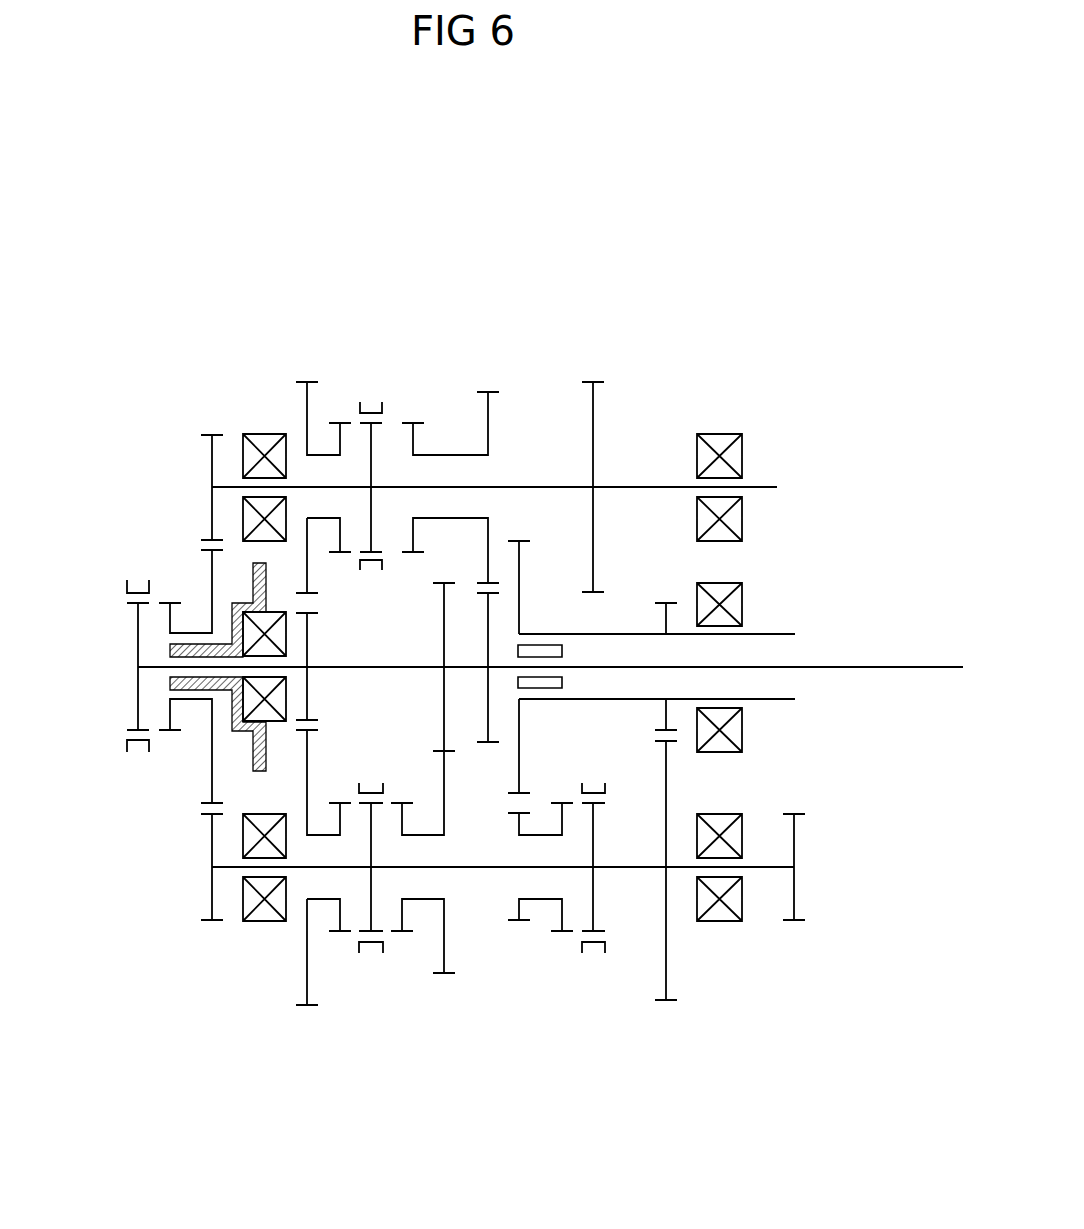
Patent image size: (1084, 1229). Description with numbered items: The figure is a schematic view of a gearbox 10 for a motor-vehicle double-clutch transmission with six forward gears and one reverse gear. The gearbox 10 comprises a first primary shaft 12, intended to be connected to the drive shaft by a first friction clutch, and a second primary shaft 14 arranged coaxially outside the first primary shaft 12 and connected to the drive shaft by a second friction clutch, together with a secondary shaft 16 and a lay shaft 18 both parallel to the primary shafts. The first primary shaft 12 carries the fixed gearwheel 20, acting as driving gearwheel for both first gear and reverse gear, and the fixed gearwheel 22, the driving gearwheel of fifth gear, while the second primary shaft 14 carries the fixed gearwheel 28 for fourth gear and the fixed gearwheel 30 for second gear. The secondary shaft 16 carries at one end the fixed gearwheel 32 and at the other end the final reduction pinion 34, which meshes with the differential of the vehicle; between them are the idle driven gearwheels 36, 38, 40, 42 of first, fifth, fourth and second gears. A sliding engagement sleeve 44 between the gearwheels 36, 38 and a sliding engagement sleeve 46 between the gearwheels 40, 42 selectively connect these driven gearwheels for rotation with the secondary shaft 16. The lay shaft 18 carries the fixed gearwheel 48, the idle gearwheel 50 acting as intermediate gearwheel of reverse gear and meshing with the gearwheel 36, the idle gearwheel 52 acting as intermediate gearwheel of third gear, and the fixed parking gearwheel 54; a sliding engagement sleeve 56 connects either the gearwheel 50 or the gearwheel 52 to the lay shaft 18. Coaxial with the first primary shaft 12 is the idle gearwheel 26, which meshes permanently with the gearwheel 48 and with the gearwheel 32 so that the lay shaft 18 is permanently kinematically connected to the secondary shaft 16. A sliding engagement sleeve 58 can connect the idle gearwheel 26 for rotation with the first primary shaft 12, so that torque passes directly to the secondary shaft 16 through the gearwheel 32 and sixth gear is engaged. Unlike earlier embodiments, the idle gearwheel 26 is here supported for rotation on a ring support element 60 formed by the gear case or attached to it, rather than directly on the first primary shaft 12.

The gearbox 10 is at (172, 410).
The first primary shaft 12 is at (360, 669).
The second primary shaft 14 is at (767, 634).
The secondary shaft 16 is at (763, 867).
The lay shaft 18 is at (640, 487).
The gearwheel 20 is at (310, 644).
The gearwheel 22 is at (443, 627).
The idle gearwheel 26 is at (212, 608).
The gearwheel 28 is at (523, 580).
The gearwheel 30 is at (666, 603).
The gearwheel 32 is at (212, 920).
The final reduction pinion 34 is at (791, 808).
The gearwheel 36 is at (310, 1008).
The gearwheel 38 is at (445, 960).
The gearwheel 40 is at (519, 920).
The gearwheel 42 is at (670, 1002).
The sliding engagement sleeve 44 is at (383, 947).
The sliding engagement sleeve 46 is at (585, 950).
The gearwheel 48 is at (208, 432).
The gearwheel 50 is at (305, 413).
The gearwheel 52 is at (490, 415).
The parking gearwheel 54 is at (595, 405).
The sliding engagement sleeve 56 is at (381, 407).
The sliding engagement sleeve 58 is at (128, 748).
The ring support element 60 is at (170, 650).